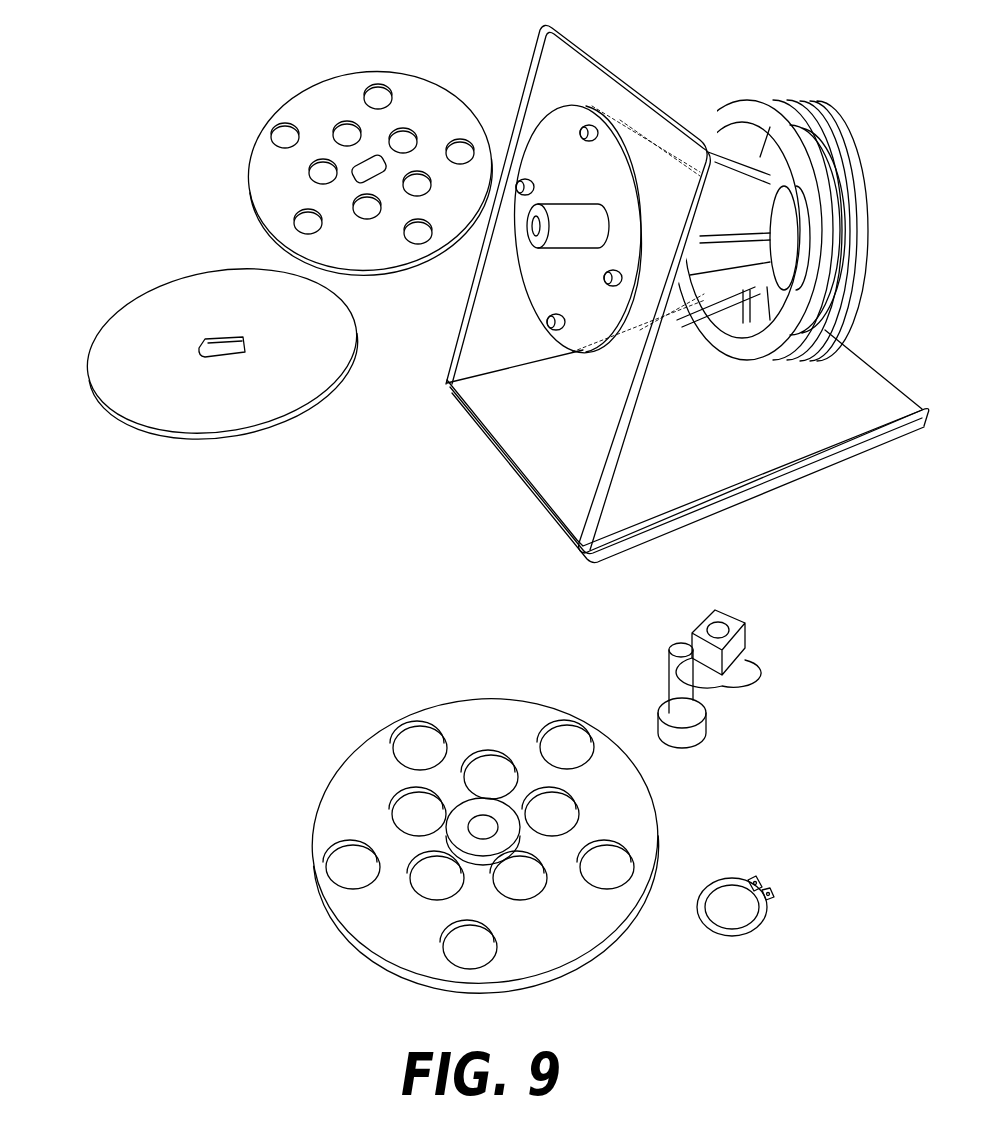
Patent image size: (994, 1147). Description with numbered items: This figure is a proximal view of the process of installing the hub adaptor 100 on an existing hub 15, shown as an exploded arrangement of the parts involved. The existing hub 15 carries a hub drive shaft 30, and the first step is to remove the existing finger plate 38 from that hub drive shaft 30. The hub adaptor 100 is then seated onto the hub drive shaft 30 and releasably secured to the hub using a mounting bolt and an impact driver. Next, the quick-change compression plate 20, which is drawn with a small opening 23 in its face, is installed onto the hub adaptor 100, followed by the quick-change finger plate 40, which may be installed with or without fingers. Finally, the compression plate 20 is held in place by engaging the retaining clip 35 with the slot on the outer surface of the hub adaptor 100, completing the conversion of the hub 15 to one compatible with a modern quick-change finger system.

The hub 15 is at (733, 200).
The quick-change compression plate 20 is at (158, 393).
The slot 23 is at (225, 347).
The hub drive shaft 30 is at (573, 223).
The retaining clip 35 is at (767, 913).
The existing finger plate 38 is at (325, 108).
The quick-change finger plate 40 is at (613, 808).
The hub adaptor 100 is at (730, 658).